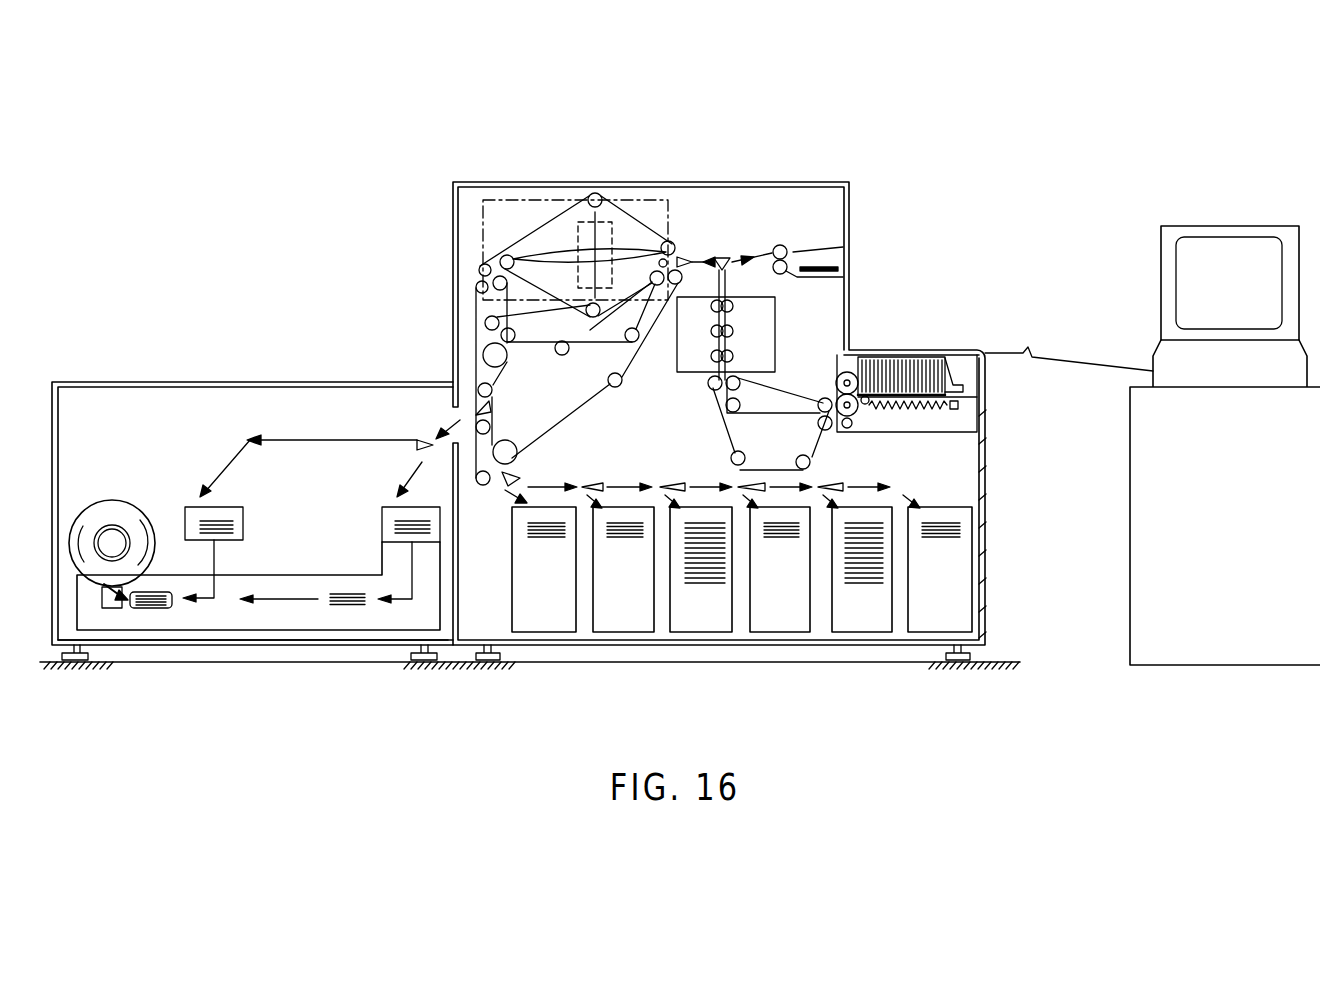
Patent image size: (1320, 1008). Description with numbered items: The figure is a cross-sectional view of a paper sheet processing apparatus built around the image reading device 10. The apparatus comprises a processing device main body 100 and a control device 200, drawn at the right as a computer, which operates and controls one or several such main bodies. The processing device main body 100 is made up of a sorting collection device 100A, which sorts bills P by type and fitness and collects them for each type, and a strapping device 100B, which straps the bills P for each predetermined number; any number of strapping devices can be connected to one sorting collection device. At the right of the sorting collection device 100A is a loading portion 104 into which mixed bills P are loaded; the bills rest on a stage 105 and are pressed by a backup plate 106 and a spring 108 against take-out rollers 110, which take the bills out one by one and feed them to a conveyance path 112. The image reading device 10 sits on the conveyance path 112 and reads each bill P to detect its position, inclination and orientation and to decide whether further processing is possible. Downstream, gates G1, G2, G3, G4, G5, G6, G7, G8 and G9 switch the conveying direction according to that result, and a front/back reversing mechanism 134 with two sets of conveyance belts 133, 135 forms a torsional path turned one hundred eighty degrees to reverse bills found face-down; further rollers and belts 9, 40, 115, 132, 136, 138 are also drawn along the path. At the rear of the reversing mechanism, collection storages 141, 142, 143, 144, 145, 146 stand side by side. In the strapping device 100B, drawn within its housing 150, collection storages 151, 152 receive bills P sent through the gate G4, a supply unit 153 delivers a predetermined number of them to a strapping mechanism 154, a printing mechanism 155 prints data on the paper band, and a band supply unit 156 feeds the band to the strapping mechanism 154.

The processing device main body 100 is at (940, 222).
The sorting collection device 100A is at (745, 178).
The strapping device 100B is at (257, 378).
The control device 200 is at (1230, 212).
The image reading device 10 is at (775, 300).
The transfer guide 9 is at (823, 398).
The conveyance path 40 is at (633, 485).
The loading portion 104 is at (893, 327).
The stage 105 is at (975, 398).
The backup plate 106 is at (950, 370).
The spring 108 is at (925, 410).
The take-out rollers 110 is at (842, 373).
The conveyance path 112 is at (789, 408).
The conveyance rollers 115 is at (712, 390).
The discharge rollers 132 is at (820, 257).
The conveyance belt 133 is at (525, 235).
The front/back reversing mechanism 134 is at (642, 195).
The conveyance belt 135 is at (652, 283).
The conveyance belt 136 is at (640, 340).
The transfer belt unit 138 is at (480, 335).
The collection storage 141 is at (543, 632).
The collection storage 142 is at (623, 632).
The collection storage 143 is at (700, 632).
The collection storage 144 is at (778, 632).
The collection storage 145 is at (851, 632).
The collection storage 146 is at (921, 632).
The housing 150 is at (275, 638).
The collection storage 151 is at (382, 516).
The collection storage 152 is at (215, 507).
The supply unit 153 is at (445, 585).
The strapping mechanism 154 is at (155, 610).
The printing mechanism 155 is at (110, 610).
The band supply unit 156 is at (118, 505).
The bill P is at (909, 362).
The gate G1 is at (723, 257).
The gate G2 is at (680, 257).
The gate G3 is at (492, 411).
The gate G4 is at (420, 443).
The gate G5 is at (502, 480).
The gate G6 is at (588, 485).
The gate G7 is at (673, 485).
The gate G8 is at (738, 487).
The gate G9 is at (858, 488).